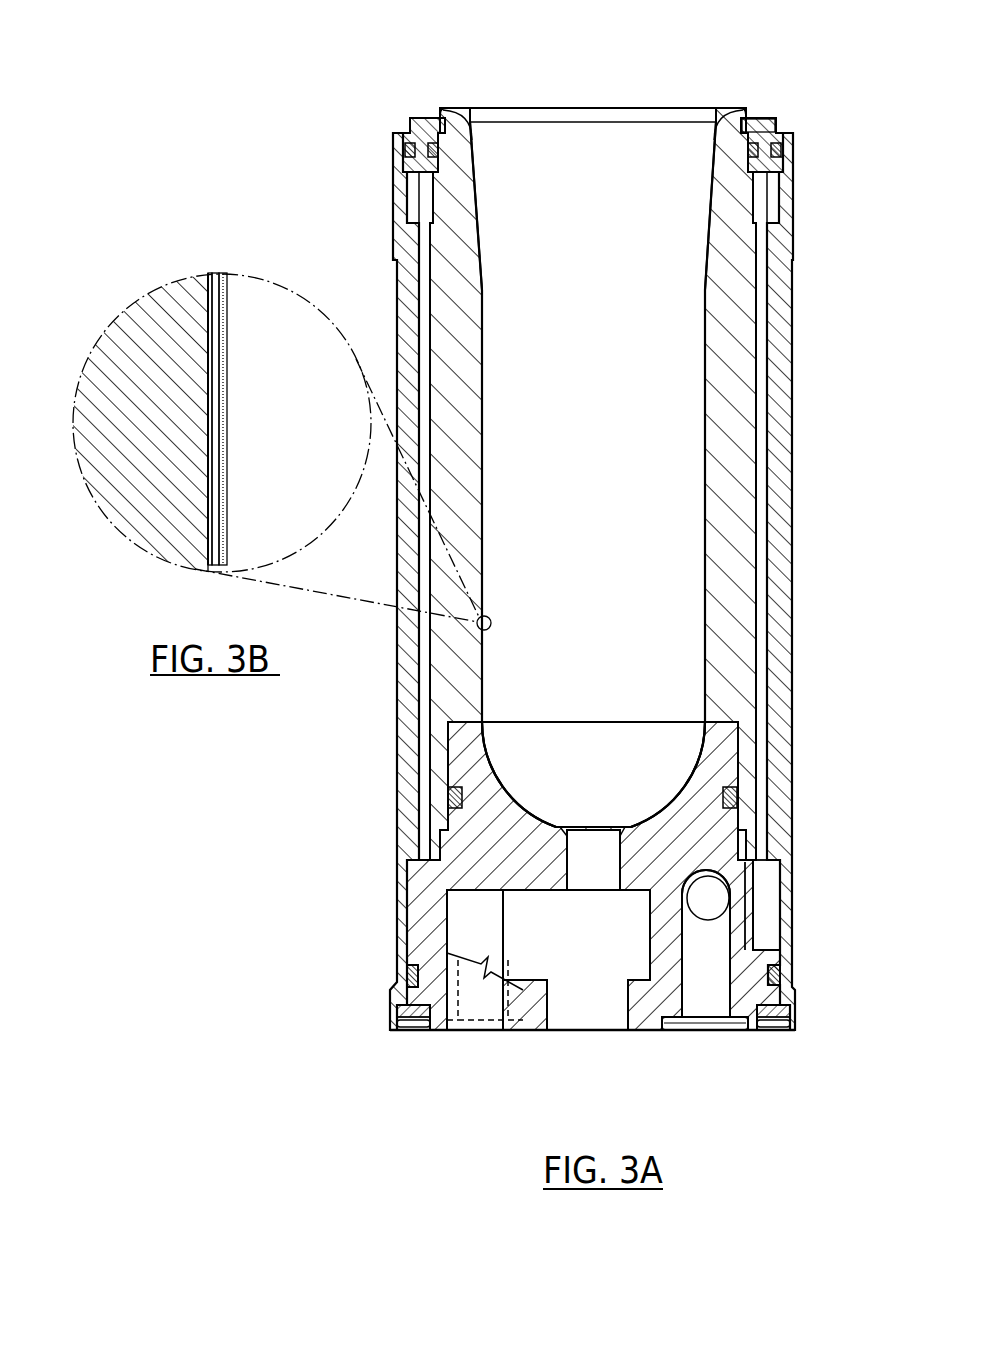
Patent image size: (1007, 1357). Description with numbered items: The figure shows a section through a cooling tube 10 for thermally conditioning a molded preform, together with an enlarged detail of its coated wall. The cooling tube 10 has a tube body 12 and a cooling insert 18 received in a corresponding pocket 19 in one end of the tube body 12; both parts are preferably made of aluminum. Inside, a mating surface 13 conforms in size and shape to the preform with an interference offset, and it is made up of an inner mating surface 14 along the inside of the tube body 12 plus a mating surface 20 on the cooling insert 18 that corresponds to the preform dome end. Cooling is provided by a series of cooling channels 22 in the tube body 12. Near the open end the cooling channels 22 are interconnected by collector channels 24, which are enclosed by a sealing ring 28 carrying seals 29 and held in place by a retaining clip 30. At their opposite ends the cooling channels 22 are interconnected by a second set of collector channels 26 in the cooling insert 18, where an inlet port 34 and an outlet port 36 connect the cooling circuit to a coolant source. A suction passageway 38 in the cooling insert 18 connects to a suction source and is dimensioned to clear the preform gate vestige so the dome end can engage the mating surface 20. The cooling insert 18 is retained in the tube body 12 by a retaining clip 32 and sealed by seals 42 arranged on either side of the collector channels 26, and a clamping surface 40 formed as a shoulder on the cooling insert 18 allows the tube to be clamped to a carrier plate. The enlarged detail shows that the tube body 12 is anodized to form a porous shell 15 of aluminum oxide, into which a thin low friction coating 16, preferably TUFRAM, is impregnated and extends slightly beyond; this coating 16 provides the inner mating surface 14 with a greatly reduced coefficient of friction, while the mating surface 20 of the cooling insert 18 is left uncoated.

In FIG. 3A, the cooling tube 10 is at (377, 125).
In FIG. 3A, the tube body 12 is at (732, 278).
In FIG. 3B, the tube body 12 is at (120, 324).
In FIG. 3A, the mating surface 13 is at (523, 793).
In FIG. 3A, the inner mating surface 14 is at (712, 446).
In FIG. 3B, the inner mating surface 14 is at (227, 318).
In FIG. 3B, the porous shell 15 is at (211, 348).
In FIG. 3B, the low friction coating 16 is at (227, 350).
In FIG. 3A, the cooling insert 18 is at (726, 766).
In FIG. 3A, the pocket 19 is at (790, 998).
In FIG. 3A, the mating surface 20 is at (684, 790).
In FIG. 3A, the cooling channels 22 is at (768, 496).
In FIG. 3A, the collector channels 24 is at (774, 205).
In FIG. 3A, the collector channels 26 is at (762, 918).
In FIG. 3A, the sealing ring 28 is at (787, 136).
In FIG. 3A, the seals 29 is at (790, 150).
In FIG. 3A, the retaining clip 30 is at (780, 117).
In FIG. 3A, the retaining clip 32 is at (778, 1024).
In FIG. 3A, the inlet port 34 is at (706, 1000).
In FIG. 3A, the outlet port 36 is at (484, 1005).
In FIG. 3A, the suction passageway 38 is at (600, 877).
In FIG. 3A, the clamping surface 40 is at (548, 966).
In FIG. 3A, the seals 42 is at (740, 797).